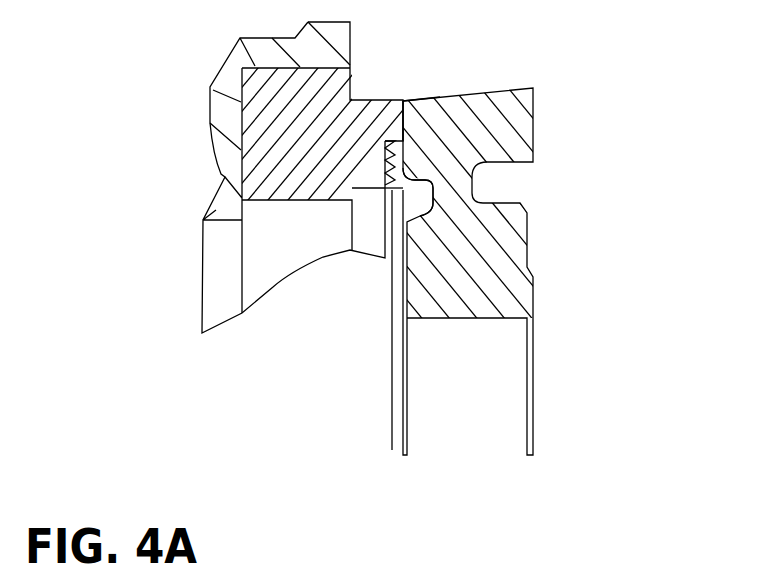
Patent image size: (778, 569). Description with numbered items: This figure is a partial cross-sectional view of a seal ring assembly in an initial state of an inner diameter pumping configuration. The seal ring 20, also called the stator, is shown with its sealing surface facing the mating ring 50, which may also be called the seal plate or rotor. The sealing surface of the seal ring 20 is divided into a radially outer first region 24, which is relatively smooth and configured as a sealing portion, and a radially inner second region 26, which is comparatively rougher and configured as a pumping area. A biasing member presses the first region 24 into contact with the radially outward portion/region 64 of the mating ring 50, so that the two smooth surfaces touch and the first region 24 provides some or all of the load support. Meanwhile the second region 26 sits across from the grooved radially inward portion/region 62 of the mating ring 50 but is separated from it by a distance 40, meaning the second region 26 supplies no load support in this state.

The seal ring 20 is at (218, 91).
The first region 24 is at (388, 88).
The second region 26 is at (398, 200).
The distance 40 is at (438, 438).
The mating ring 50 is at (508, 127).
The radially inward portion/region 62 is at (422, 195).
The radially outward portion/region 64 is at (423, 80).